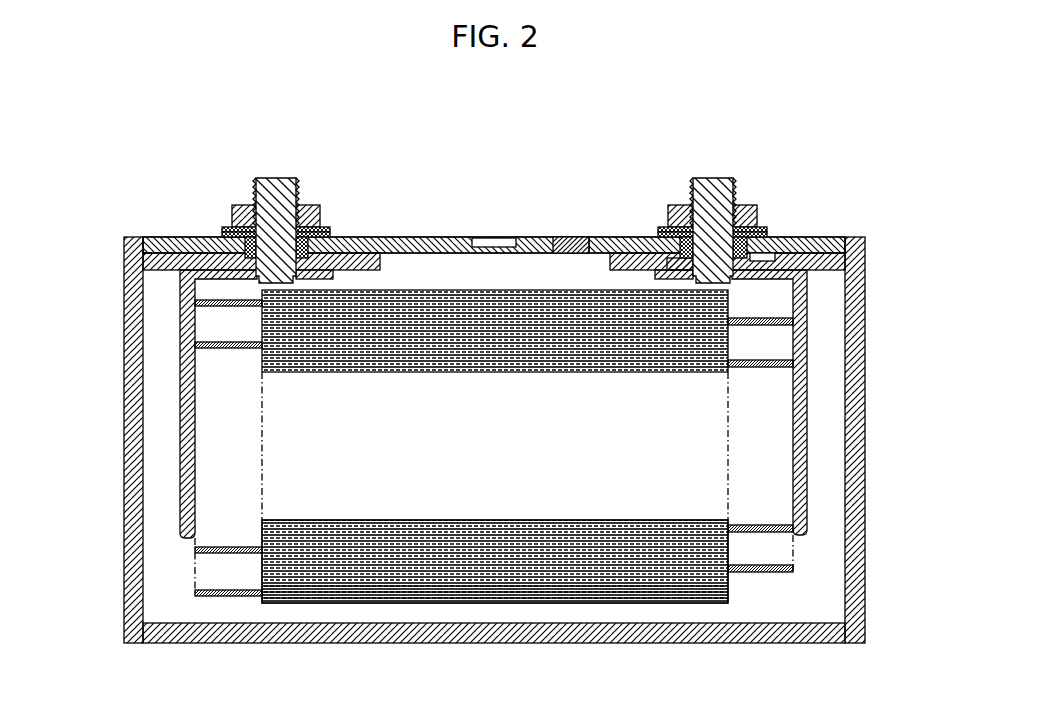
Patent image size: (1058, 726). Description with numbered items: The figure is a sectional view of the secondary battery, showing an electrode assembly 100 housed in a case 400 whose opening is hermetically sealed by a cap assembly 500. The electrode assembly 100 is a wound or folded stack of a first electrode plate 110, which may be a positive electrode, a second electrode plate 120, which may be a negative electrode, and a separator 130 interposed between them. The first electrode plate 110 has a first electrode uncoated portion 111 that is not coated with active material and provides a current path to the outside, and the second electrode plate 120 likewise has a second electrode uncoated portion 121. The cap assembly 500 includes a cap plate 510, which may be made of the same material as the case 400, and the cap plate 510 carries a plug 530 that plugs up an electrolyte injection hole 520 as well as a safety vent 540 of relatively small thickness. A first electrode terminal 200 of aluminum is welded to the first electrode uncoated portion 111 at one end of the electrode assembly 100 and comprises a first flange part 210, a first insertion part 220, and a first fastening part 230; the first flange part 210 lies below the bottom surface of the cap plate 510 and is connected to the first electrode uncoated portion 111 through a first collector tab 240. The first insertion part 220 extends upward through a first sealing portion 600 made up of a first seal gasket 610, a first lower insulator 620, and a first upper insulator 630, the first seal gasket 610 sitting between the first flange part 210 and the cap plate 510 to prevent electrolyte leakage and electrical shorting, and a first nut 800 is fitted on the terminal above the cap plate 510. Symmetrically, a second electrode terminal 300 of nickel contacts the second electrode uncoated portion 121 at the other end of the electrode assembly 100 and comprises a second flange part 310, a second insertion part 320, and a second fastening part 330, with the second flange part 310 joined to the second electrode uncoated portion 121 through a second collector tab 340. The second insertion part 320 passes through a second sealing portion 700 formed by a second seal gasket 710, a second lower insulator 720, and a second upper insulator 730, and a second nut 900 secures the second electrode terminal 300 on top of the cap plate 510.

The electrode assembly 100 is at (498, 611).
The first electrode plate 110 is at (320, 606).
The first electrode uncoated portion 111 is at (233, 597).
The second electrode plate 120 is at (632, 606).
The second electrode uncoated portion 121 is at (752, 574).
The separator 130 is at (409, 606).
The first electrode terminal 200 is at (160, 148).
The first flange part 210 is at (192, 237).
The first insertion part 220 is at (228, 223).
The first fastening part 230 is at (253, 187).
The first collector tab 240 is at (180, 342).
The second electrode terminal 300 is at (826, 148).
The second flange part 310 is at (790, 253).
The second insertion part 320 is at (757, 247).
The second fastening part 330 is at (726, 187).
The second collector tab 340 is at (807, 342).
The case 400 is at (866, 436).
The cap assembly 500 is at (447, 230).
The cap plate 510 is at (396, 237).
The electrolyte injection hole 520 is at (556, 237).
The plug 530 is at (580, 237).
The safety vent 540 is at (497, 238).
The first sealing portion 600 is at (387, 118).
The first seal gasket 610 is at (277, 183).
The first lower insulator 620 is at (297, 222).
The first upper insulator 630 is at (330, 232).
The second sealing portion 700 is at (605, 118).
The second seal gasket 710 is at (700, 245).
The second lower insulator 720 is at (677, 218).
The second upper insulator 730 is at (652, 237).
The first nut 800 is at (323, 227).
The second nut 900 is at (667, 205).